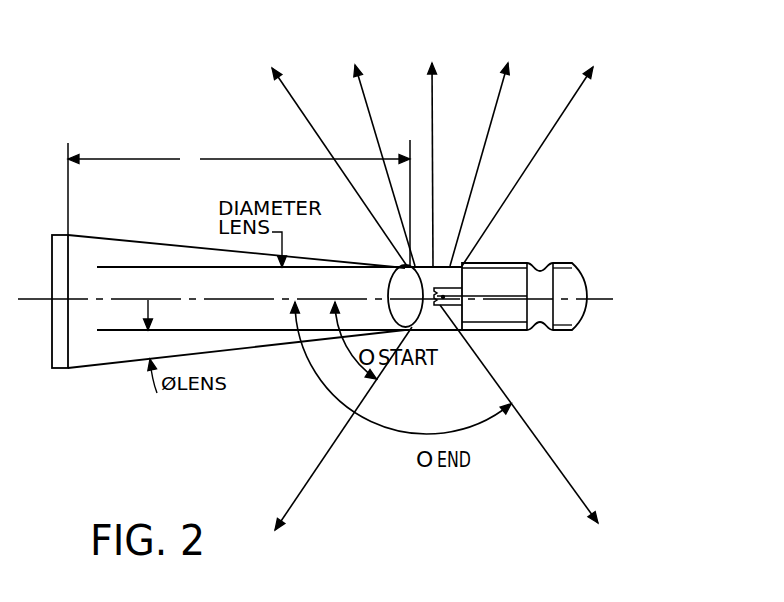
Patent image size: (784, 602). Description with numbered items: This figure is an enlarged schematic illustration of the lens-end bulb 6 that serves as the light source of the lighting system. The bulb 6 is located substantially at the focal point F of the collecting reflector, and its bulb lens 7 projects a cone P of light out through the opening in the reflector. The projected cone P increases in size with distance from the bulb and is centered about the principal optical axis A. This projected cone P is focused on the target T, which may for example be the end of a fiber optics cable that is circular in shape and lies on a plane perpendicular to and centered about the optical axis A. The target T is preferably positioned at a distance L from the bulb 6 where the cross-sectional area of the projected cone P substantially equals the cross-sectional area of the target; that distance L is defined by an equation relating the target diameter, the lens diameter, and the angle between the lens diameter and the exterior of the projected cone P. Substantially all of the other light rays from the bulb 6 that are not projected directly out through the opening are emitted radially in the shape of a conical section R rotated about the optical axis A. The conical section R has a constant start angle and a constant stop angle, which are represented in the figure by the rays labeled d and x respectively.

The lens-end bulb 6 is at (490, 275).
The bulb lens 7 is at (403, 287).
The target T is at (62, 235).
The projected cone of light P is at (172, 253).
The focal point F is at (443, 299).
The principal optical axis A is at (612, 299).
The distance from bulb to target L is at (239, 203).
The start-angle ray d is at (340, 168).
The conical section of emitted light R is at (533, 132).
The stop-angle ray x is at (512, 196).